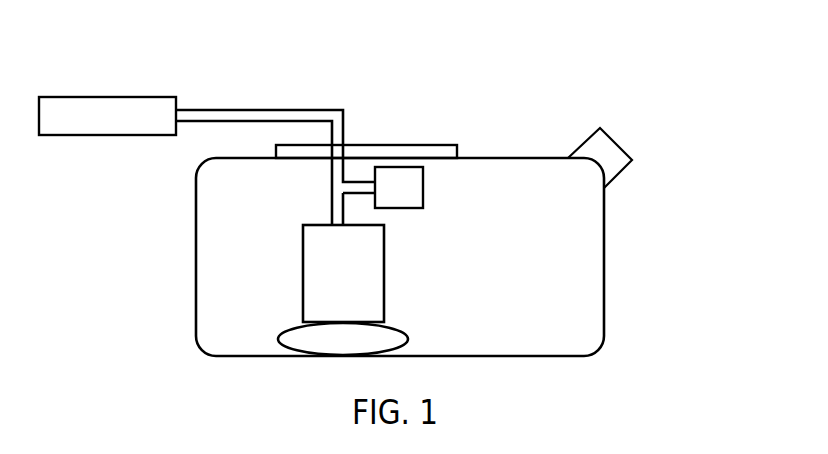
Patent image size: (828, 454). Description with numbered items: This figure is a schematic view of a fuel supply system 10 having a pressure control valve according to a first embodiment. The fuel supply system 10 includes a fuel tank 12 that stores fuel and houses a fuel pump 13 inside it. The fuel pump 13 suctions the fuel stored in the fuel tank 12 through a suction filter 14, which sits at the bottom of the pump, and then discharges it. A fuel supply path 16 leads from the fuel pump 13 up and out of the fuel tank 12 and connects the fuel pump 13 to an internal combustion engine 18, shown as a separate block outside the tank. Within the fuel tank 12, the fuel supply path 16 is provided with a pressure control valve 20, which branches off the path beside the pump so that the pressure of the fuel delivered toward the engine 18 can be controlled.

The fuel supply system 10 is at (470, 85).
The fuel tank 12 is at (604, 266).
The fuel pump 13 is at (384, 270).
The suction filter 14 is at (406, 331).
The fuel supply path 16 is at (247, 110).
The internal combustion engine 18 is at (80, 97).
The pressure control valve 20 is at (423, 188).